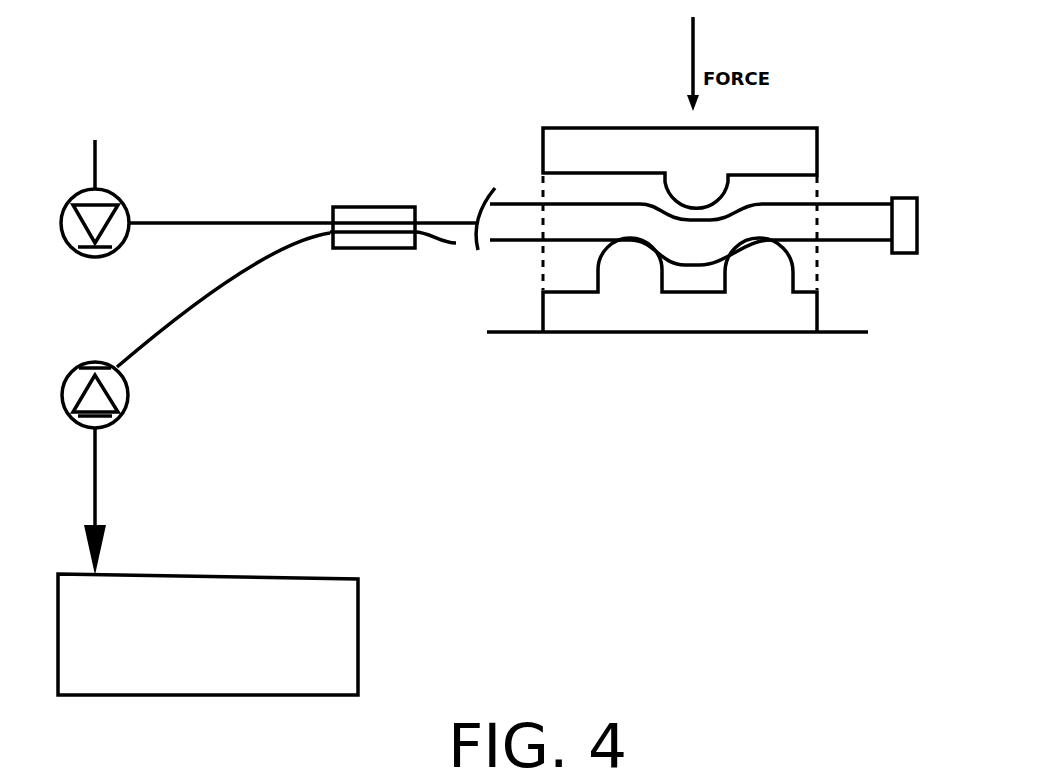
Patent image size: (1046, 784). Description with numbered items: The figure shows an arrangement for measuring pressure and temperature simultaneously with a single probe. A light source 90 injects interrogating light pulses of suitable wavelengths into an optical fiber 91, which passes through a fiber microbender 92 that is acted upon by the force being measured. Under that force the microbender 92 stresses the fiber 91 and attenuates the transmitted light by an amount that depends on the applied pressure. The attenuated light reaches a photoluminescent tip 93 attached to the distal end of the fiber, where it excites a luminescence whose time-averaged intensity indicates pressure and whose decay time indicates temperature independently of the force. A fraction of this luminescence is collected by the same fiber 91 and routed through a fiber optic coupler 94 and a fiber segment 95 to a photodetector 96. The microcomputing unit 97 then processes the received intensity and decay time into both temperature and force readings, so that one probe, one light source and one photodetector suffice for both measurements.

The light source 90 is at (122, 193).
The optical fiber 91 is at (231, 216).
The fiber microbender 92 is at (595, 118).
The photoluminescent tip 93 is at (900, 262).
The fiber optic coupler 94 is at (373, 200).
The fiber segment 95 is at (260, 263).
The photodetector 96 is at (138, 402).
The microcomputing unit 97 is at (310, 570).